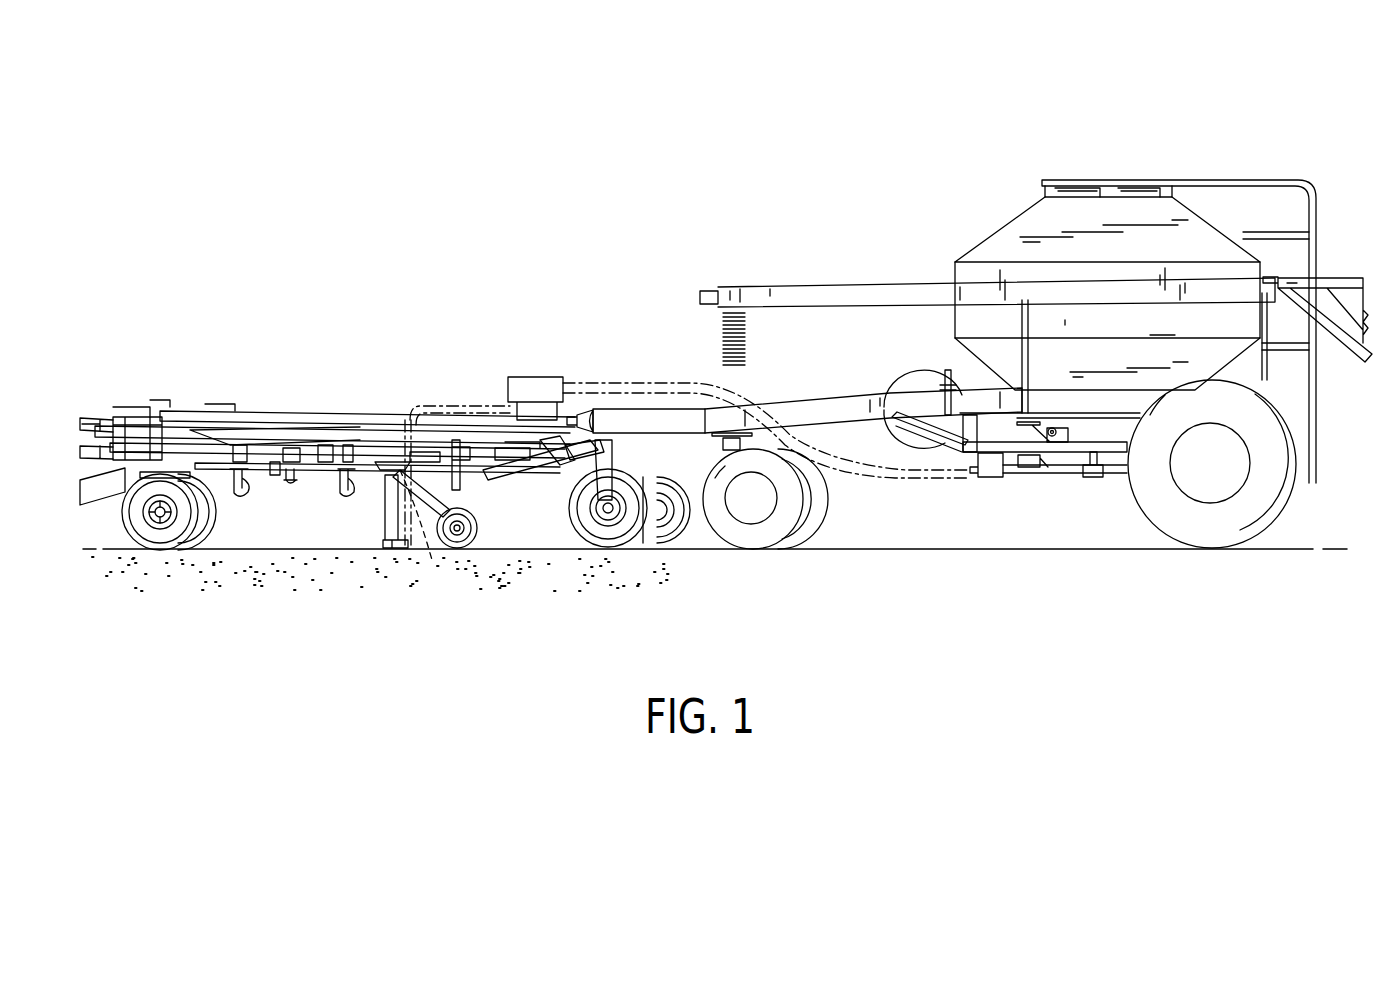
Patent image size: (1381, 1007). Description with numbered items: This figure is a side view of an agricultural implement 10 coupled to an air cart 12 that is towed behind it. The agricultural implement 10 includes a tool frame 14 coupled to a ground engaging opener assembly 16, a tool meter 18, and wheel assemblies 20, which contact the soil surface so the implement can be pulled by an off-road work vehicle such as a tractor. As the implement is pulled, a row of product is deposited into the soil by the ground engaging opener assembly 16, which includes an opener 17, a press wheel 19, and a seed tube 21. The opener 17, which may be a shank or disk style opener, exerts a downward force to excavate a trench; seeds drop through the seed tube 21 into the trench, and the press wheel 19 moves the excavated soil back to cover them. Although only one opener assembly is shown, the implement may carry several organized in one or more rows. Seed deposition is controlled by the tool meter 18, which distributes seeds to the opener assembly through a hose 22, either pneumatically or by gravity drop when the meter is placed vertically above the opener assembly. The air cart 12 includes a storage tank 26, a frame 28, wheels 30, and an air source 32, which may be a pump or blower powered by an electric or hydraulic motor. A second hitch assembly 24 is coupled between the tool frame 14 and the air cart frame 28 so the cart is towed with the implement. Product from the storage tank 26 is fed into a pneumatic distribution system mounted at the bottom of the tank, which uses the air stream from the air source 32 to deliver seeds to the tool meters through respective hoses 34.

The agricultural implement 10 is at (535, 490).
The air cart 12 is at (967, 377).
The tool frame 14 is at (389, 436).
The ground engaging opener assembly 16 is at (402, 564).
The opener 17 is at (395, 545).
The tool meter 18 is at (537, 377).
The press wheel 19 is at (482, 522).
The wheel assemblies 20 is at (160, 549).
The seed tube 21 is at (429, 556).
The hose 22 is at (463, 403).
The second hitch assembly 24 is at (578, 420).
The storage tank 26 is at (1028, 220).
The frame 28 is at (820, 397).
The wheels 30 is at (828, 503).
The air source 32 is at (898, 378).
The hoses 34 is at (895, 488).